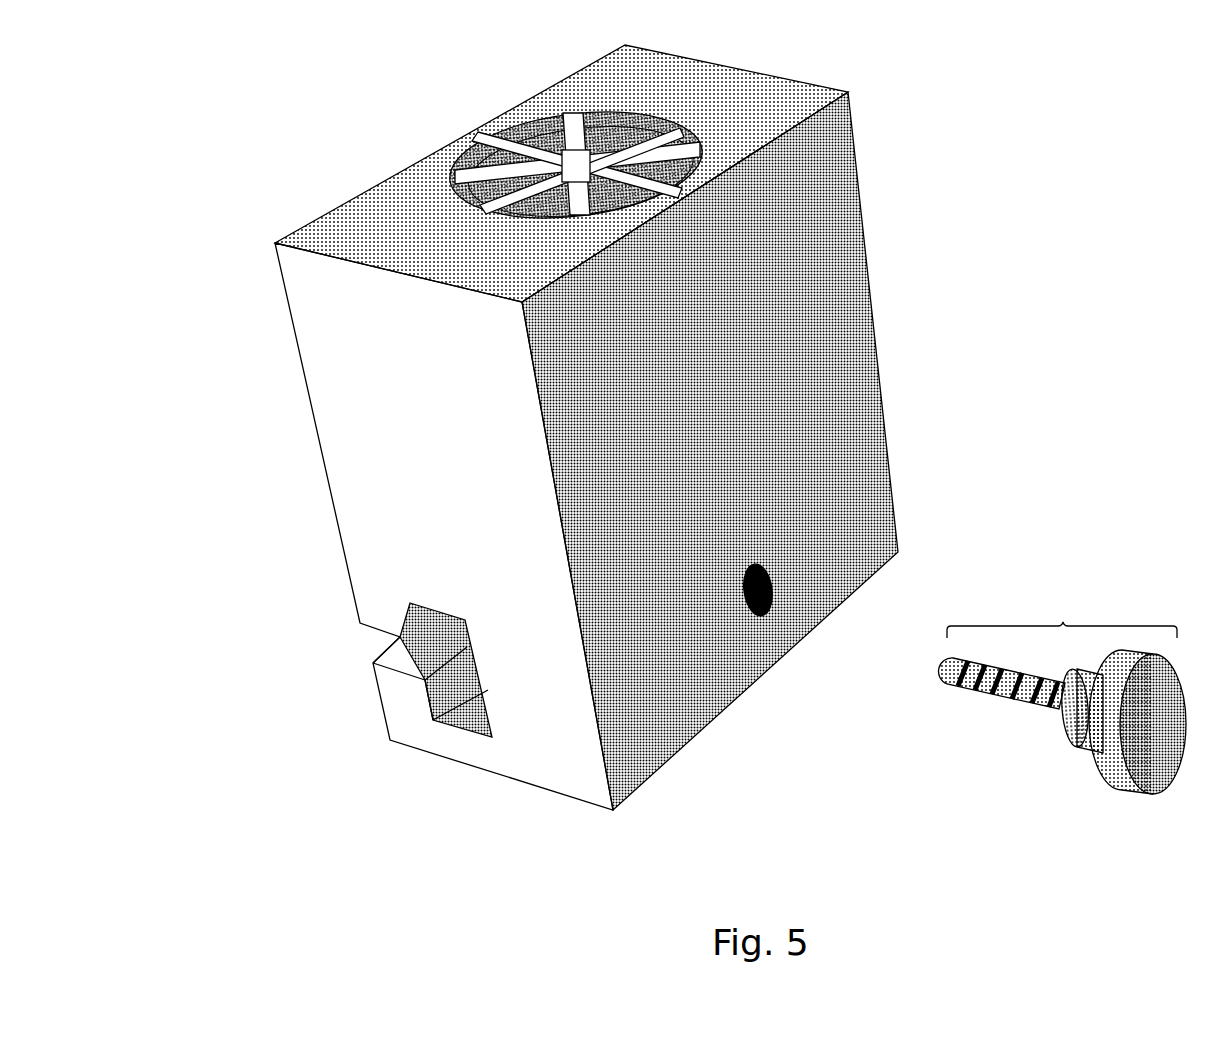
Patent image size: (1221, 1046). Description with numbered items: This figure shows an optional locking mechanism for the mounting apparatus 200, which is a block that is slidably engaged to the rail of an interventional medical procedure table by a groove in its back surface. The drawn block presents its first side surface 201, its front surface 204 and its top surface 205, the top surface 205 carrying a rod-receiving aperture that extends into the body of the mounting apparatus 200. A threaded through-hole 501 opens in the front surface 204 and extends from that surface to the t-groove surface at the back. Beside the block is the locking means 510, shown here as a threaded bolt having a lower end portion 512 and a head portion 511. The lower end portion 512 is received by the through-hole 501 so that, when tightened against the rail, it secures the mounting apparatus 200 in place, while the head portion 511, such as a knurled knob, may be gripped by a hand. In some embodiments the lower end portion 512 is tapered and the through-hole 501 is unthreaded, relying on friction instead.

The mounting apparatus 200 is at (655, 471).
The first side surface 201 is at (402, 477).
The front surface 204 is at (842, 205).
The top surface 205 is at (345, 218).
The threaded through-hole 501 is at (785, 555).
The locking means 510 is at (1044, 614).
The head portion 511 is at (1122, 774).
The lower end portion 512 is at (973, 695).